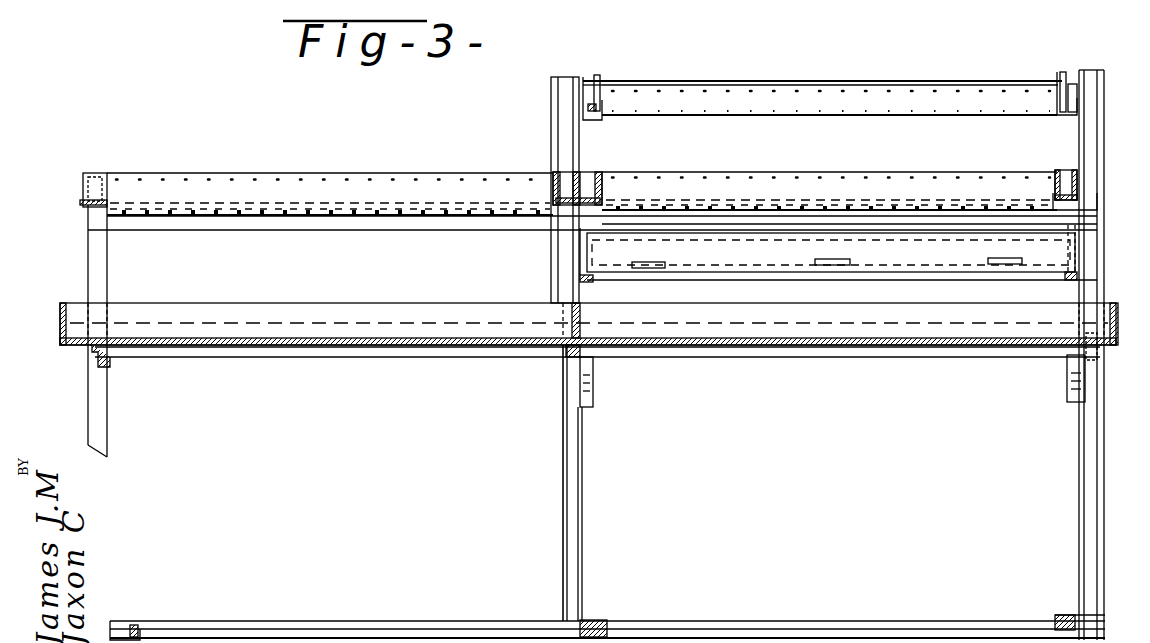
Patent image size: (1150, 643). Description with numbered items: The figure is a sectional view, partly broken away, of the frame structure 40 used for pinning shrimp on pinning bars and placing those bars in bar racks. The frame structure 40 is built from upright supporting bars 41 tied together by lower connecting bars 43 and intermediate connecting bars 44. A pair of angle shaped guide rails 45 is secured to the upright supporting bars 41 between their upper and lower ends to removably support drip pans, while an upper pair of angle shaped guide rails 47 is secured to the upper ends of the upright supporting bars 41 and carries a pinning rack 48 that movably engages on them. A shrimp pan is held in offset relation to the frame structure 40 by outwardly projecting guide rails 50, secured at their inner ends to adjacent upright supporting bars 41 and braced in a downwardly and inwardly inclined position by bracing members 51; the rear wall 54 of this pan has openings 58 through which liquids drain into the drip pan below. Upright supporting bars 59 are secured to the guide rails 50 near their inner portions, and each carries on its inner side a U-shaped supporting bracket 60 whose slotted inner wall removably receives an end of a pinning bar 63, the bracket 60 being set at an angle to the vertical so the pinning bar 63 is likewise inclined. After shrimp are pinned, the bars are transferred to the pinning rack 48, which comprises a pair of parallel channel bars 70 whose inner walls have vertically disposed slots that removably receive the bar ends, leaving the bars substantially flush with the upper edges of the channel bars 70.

The frame structure 40 is at (580, 512).
The upright supporting bar 41 is at (570, 547).
The lower connecting bar 43 is at (607, 621).
The intermediate connecting bar 44 is at (108, 366).
The angle shaped guide rail 45 is at (425, 350).
The upper angle shaped guide rail 47 is at (274, 222).
The pinning rack 48 is at (80, 200).
The outwardly projecting guide rail 50 is at (586, 282).
The bracing member 51 is at (595, 394).
The rear wall 54 is at (838, 252).
The opening 58 is at (655, 258).
The upright supporting bar 59 is at (551, 118).
The U-shaped supporting bracket 60 is at (603, 103).
The pinning bar 63 is at (947, 80).
The channel bar 70 is at (1062, 170).